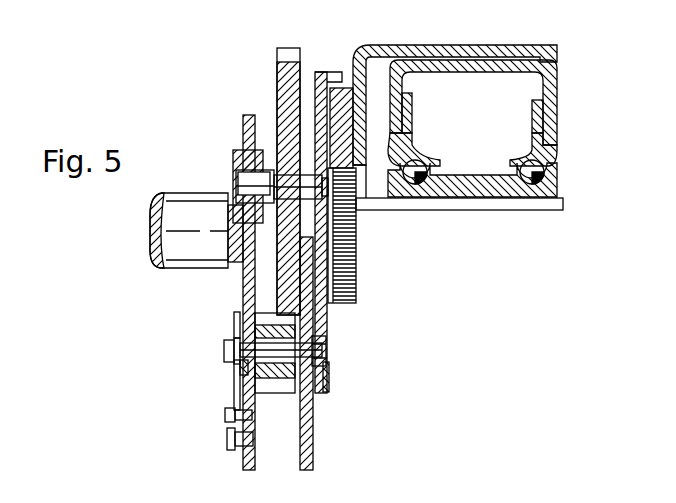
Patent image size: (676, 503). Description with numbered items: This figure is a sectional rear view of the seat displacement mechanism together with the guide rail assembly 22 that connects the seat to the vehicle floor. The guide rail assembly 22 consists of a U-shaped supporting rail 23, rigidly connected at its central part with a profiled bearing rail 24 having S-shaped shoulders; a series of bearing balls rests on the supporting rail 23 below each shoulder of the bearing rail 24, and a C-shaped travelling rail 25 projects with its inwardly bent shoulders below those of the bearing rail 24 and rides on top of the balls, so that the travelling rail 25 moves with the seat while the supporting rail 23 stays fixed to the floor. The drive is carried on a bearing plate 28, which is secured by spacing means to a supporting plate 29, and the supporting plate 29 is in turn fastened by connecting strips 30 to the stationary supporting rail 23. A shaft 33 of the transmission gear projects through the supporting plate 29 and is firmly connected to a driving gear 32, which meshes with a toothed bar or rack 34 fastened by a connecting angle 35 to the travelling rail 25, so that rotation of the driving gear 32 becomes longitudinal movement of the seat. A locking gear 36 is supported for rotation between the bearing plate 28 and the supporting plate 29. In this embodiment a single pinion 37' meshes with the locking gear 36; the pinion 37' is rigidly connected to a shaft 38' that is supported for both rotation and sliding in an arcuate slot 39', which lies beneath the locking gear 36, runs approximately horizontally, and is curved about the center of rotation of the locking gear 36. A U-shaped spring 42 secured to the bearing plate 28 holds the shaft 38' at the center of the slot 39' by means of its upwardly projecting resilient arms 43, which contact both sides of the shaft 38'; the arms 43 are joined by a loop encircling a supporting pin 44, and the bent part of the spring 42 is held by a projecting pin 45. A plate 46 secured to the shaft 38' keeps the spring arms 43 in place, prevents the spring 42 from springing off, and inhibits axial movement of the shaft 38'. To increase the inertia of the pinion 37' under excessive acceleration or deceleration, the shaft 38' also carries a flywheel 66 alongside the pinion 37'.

The guide rail assembly 22 is at (481, 129).
The supporting rail 23 is at (480, 185).
The bearing rail 24 is at (440, 160).
The travelling rail 25 is at (556, 98).
The bearing plate 28 is at (243, 293).
The supporting plate 29 is at (321, 72).
The connecting strips 30 is at (418, 210).
The driving gear 32 is at (346, 300).
The shaft 33 is at (232, 230).
The toothed bar or rack 34 is at (345, 90).
The connecting angle 35 is at (430, 52).
The locking gear 36 is at (283, 55).
The pinion 37' is at (275, 403).
The shaft 38' is at (356, 351).
The arcuate slot 39' is at (280, 395).
The U-shaped spring 42 is at (235, 323).
The resilient arms 43 is at (234, 376).
The supporting pin 44 is at (230, 440).
The projecting pin 45 is at (228, 415).
The plate 46 is at (226, 349).
The flywheel 66 is at (306, 445).